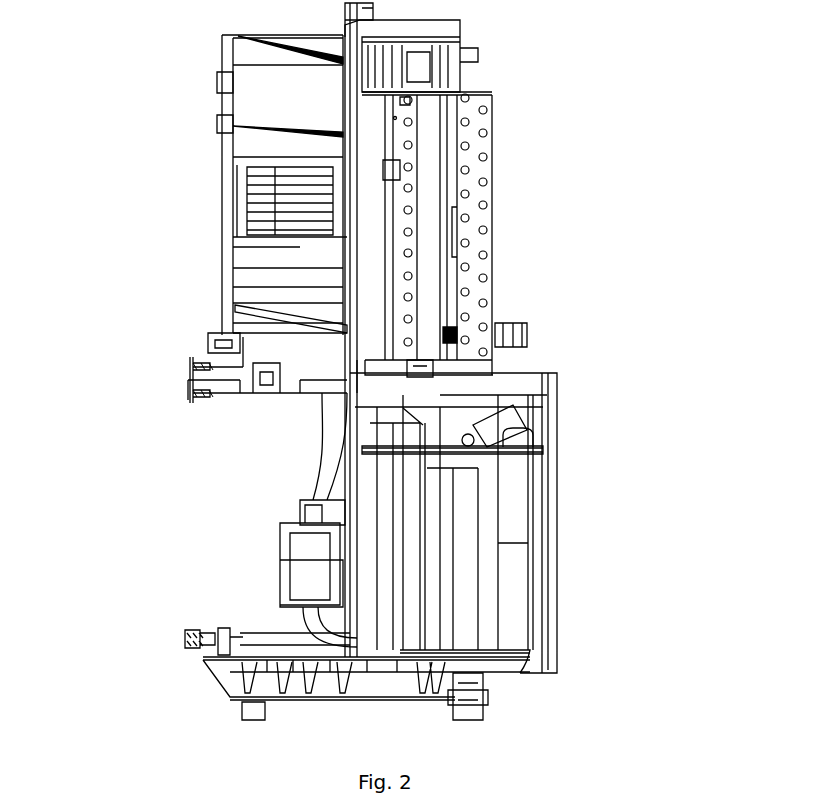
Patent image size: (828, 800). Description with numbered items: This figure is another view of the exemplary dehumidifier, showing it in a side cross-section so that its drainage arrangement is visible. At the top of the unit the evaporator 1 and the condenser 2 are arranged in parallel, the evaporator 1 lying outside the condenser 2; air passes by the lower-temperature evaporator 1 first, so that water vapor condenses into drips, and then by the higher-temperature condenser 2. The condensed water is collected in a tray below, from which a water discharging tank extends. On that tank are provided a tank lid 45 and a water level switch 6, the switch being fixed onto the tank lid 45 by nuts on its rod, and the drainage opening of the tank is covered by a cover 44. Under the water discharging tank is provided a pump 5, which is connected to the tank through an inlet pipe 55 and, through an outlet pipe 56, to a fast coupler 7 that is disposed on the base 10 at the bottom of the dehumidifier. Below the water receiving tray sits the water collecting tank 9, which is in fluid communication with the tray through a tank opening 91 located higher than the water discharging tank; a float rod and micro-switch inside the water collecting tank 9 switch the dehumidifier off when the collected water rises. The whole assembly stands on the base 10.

The evaporator 1 is at (490, 140).
The condenser 2 is at (418, 148).
The pump 5 is at (280, 583).
The water level switch 6 is at (238, 307).
The fast coupler 7 is at (187, 630).
The water collecting tank 9 is at (488, 398).
The base 10 is at (200, 660).
The cover 44 is at (192, 360).
The tank lid 45 is at (225, 327).
The inlet pipe 55 is at (313, 507).
The outlet pipe 56 is at (283, 643).
The tank opening 91 is at (440, 362).